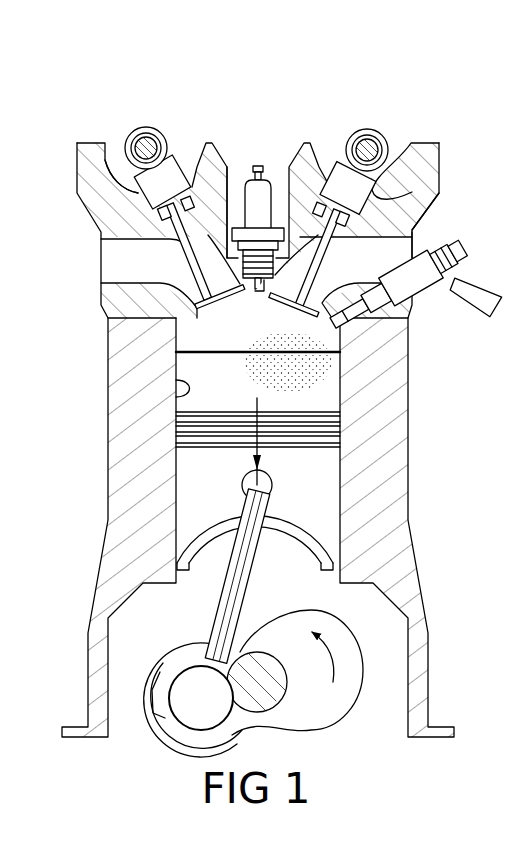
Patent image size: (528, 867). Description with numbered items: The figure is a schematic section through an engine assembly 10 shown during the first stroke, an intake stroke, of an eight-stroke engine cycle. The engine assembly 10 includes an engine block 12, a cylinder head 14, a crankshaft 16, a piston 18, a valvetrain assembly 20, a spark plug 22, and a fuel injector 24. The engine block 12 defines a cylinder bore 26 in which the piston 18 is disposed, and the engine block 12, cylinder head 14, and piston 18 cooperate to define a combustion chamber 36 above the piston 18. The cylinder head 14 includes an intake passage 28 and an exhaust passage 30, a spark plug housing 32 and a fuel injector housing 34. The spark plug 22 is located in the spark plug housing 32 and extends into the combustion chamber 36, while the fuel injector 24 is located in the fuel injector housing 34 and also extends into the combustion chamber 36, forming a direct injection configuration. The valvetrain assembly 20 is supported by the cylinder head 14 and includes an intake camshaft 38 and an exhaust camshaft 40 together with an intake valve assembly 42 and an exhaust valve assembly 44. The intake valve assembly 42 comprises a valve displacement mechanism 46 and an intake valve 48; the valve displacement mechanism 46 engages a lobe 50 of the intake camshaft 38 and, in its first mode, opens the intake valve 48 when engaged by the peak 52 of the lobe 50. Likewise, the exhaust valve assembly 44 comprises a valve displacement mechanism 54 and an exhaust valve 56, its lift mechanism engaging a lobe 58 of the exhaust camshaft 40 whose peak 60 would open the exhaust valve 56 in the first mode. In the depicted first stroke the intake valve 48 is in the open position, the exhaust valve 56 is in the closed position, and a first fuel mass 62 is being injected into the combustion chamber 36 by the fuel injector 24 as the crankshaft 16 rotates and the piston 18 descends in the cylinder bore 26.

The engine assembly 10 is at (93, 86).
The engine block 12 is at (400, 422).
The cylinder head 14 is at (86, 167).
The crankshaft 16 is at (292, 723).
The piston 18 is at (327, 490).
The valvetrain assembly 20 is at (395, 120).
The spark plug 22 is at (258, 166).
The fuel injector 24 is at (458, 258).
The cylinder bore 26 is at (176, 397).
The intake passage 28 is at (392, 249).
The exhaust passage 30 is at (129, 240).
The spark plug housing 32 is at (276, 178).
The fuel injector housing 34 is at (412, 320).
The combustion chamber 36 is at (197, 318).
The intake camshaft 38 is at (413, 92).
The exhaust camshaft 40 is at (108, 86).
The intake valve assembly 42 is at (330, 157).
The exhaust valve assembly 44 is at (183, 147).
The valve displacement mechanism 46 is at (410, 164).
The intake valve 48 is at (288, 310).
The lobe 50 is at (386, 136).
The peak 52 is at (418, 198).
The valve displacement mechanism 54 is at (118, 136).
The exhaust valve 56 is at (205, 312).
The lobe 58 is at (128, 136).
The peak 60 is at (160, 121).
The first fuel mass 62 is at (300, 342).